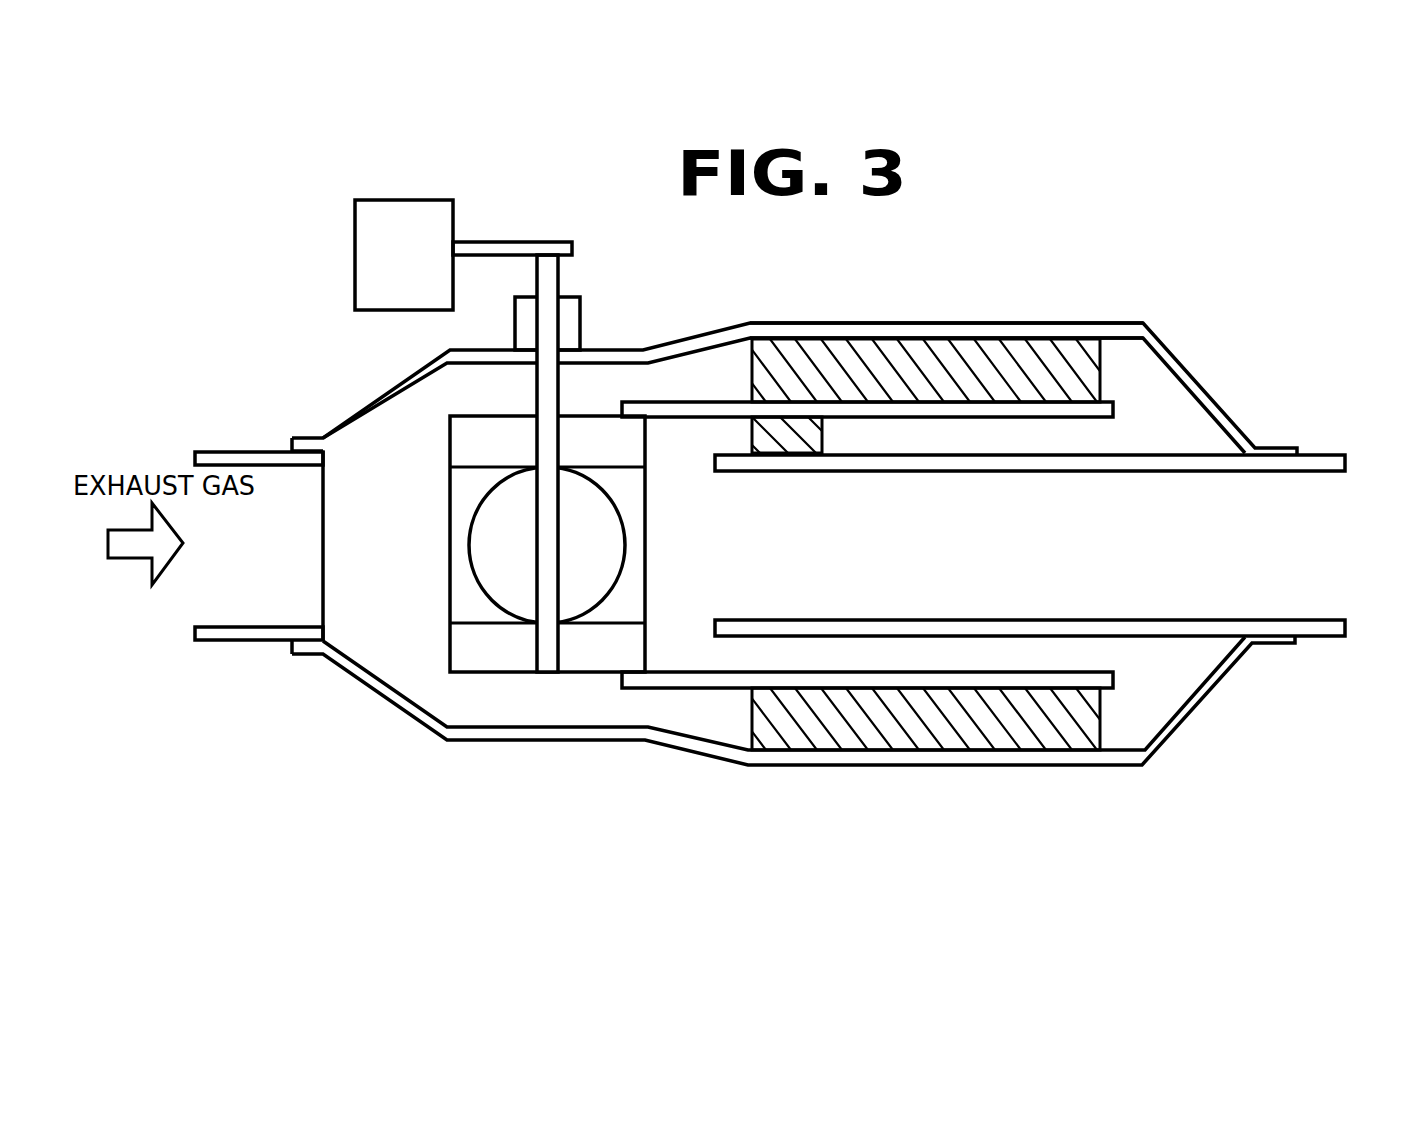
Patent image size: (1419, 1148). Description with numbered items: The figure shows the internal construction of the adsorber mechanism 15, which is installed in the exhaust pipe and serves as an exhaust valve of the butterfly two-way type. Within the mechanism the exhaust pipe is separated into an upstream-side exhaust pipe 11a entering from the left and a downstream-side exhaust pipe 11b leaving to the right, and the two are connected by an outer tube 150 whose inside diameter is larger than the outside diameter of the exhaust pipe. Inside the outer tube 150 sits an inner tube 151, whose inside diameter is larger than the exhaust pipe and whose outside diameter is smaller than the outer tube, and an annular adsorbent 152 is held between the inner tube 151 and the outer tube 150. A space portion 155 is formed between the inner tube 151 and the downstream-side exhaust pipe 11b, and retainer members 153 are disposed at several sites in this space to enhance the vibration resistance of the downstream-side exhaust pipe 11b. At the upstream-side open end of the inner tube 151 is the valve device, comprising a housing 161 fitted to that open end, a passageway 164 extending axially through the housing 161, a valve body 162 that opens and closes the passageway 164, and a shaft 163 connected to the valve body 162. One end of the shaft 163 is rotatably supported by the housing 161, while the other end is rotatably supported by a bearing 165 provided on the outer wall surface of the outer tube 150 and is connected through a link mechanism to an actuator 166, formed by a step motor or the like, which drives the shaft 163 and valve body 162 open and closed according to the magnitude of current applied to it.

The adsorber mechanism 15 is at (737, 797).
The upstream-side exhaust pipe 11a is at (238, 457).
The downstream-side exhaust pipe 11b is at (1328, 463).
The outer tube 150 is at (940, 330).
The inner tube 151 is at (920, 677).
The annular adsorbent 152 is at (1077, 357).
The retainer member 153 is at (788, 437).
The space portion 155 is at (1050, 652).
The housing 161 is at (595, 653).
The valve body 162 is at (510, 588).
The shaft 163 is at (542, 653).
The passageway 164 is at (453, 607).
The bearing 165 is at (582, 323).
The actuator 166 is at (370, 270).